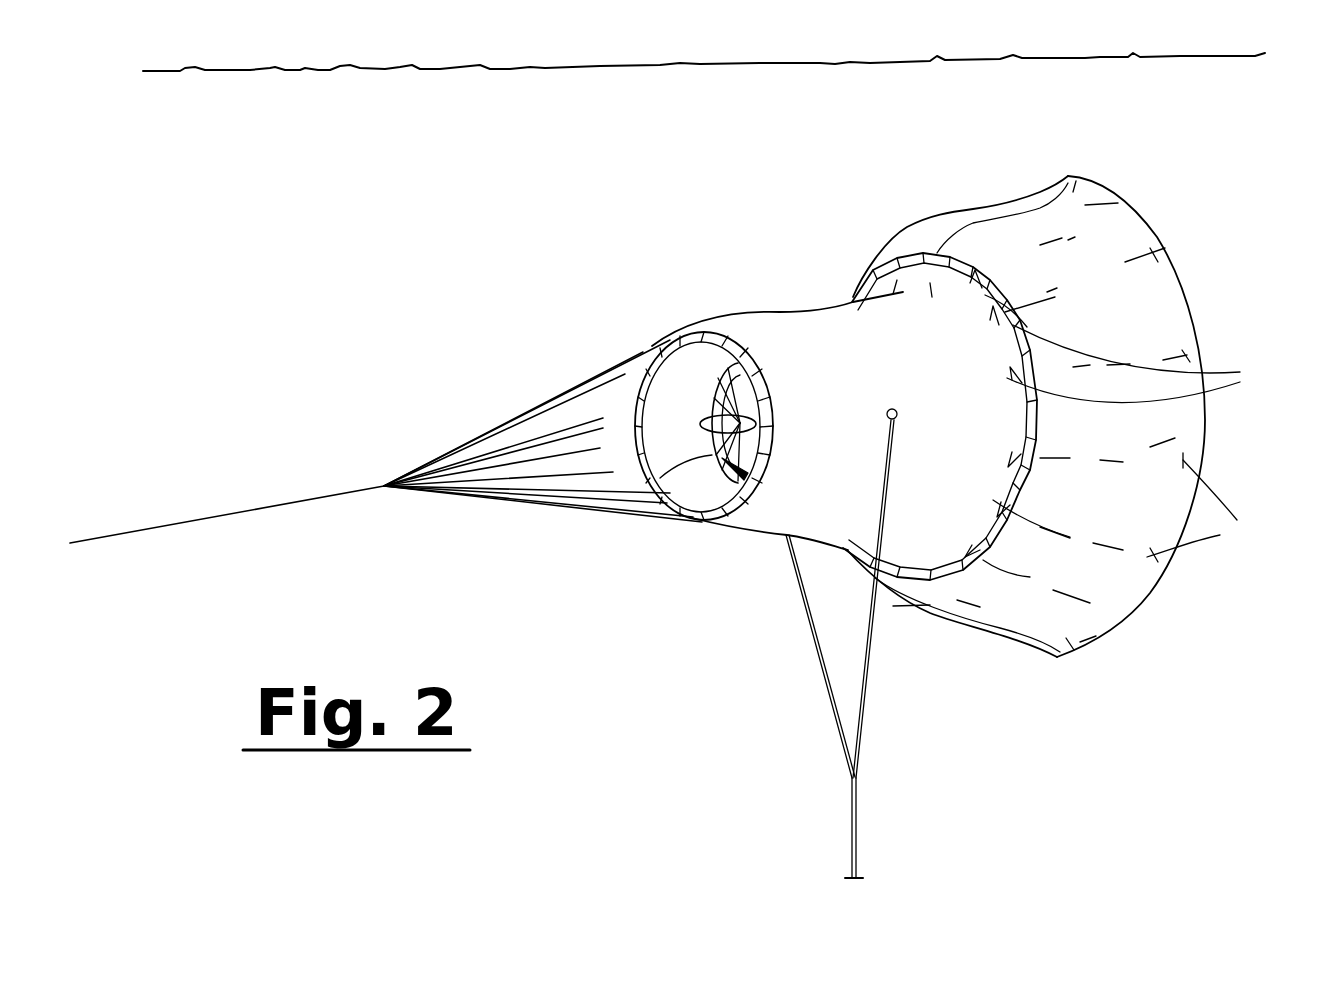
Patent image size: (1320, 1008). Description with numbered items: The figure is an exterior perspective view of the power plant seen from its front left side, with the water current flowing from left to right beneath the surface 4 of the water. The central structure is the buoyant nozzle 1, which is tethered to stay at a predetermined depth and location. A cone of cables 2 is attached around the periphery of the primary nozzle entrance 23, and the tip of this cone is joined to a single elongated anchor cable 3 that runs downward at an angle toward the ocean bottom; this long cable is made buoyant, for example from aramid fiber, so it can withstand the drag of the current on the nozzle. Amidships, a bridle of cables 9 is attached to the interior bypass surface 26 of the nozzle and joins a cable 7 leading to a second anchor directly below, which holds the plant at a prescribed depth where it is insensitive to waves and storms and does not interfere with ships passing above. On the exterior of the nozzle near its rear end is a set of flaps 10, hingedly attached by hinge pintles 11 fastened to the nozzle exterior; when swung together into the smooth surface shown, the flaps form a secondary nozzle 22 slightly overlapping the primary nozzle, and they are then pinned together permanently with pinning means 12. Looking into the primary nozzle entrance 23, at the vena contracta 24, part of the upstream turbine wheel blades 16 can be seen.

The nozzle 1 is at (814, 308).
The cone of cables 2 is at (517, 419).
The anchor cable 3 is at (250, 512).
The surface of the water 4 is at (700, 66).
The cable 7 is at (850, 826).
The bridle of cables 9 is at (818, 662).
The flaps 10 is at (998, 645).
The hinge pintles 11 is at (1139, 364).
The pinning means 12 is at (1049, 416).
The upstream turbine wheel blades 16 is at (720, 382).
The secondary nozzle 22 is at (1094, 295).
The primary nozzle entrance 23 is at (718, 515).
The vena contracta 24 is at (712, 453).
The interior bypass surface 26 is at (760, 325).